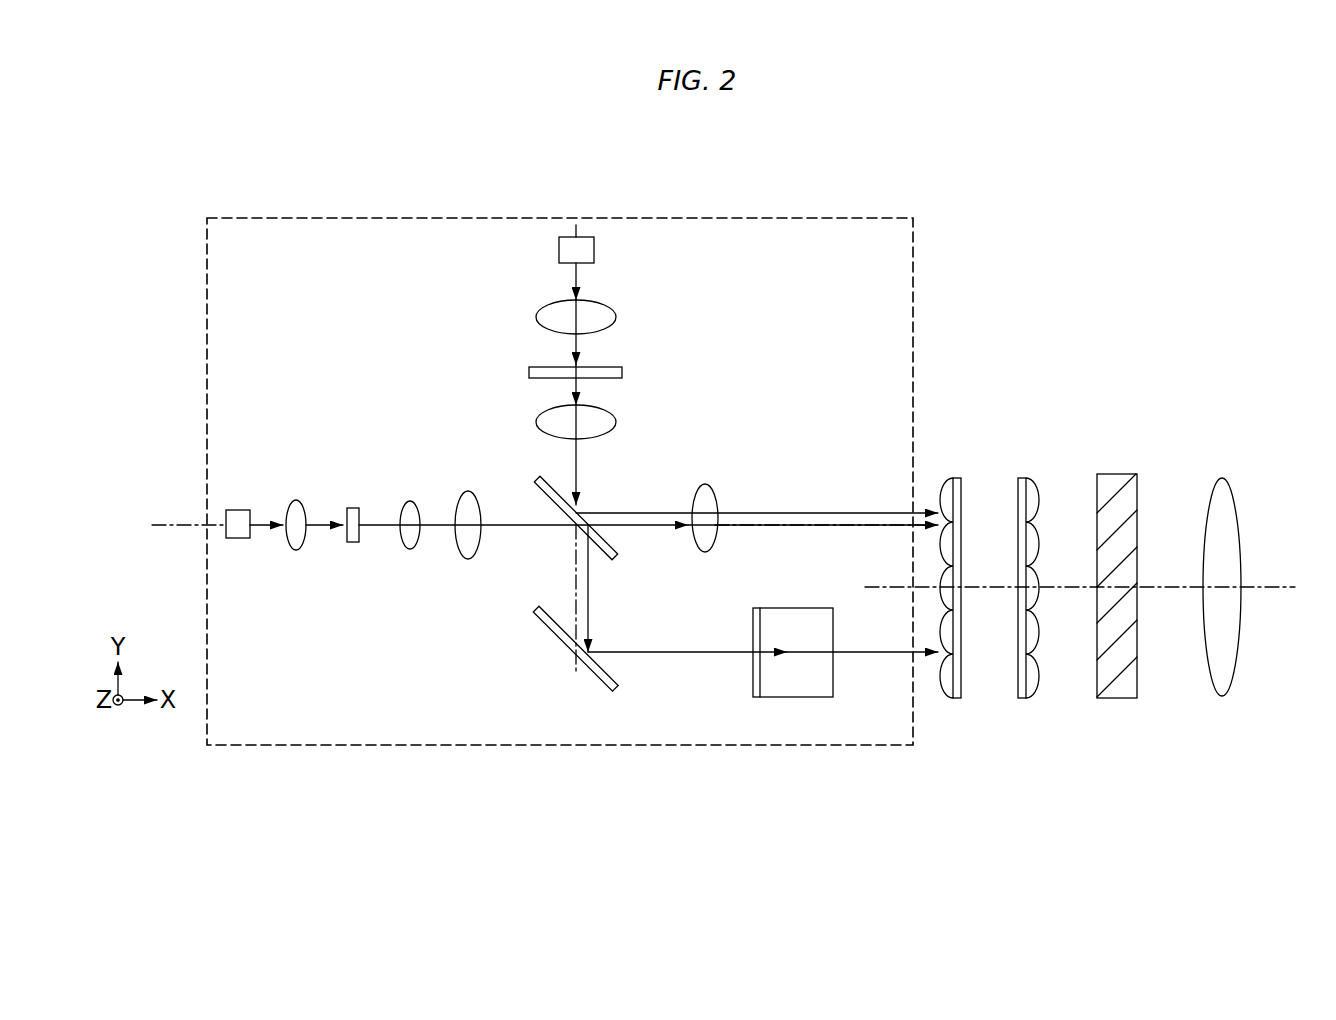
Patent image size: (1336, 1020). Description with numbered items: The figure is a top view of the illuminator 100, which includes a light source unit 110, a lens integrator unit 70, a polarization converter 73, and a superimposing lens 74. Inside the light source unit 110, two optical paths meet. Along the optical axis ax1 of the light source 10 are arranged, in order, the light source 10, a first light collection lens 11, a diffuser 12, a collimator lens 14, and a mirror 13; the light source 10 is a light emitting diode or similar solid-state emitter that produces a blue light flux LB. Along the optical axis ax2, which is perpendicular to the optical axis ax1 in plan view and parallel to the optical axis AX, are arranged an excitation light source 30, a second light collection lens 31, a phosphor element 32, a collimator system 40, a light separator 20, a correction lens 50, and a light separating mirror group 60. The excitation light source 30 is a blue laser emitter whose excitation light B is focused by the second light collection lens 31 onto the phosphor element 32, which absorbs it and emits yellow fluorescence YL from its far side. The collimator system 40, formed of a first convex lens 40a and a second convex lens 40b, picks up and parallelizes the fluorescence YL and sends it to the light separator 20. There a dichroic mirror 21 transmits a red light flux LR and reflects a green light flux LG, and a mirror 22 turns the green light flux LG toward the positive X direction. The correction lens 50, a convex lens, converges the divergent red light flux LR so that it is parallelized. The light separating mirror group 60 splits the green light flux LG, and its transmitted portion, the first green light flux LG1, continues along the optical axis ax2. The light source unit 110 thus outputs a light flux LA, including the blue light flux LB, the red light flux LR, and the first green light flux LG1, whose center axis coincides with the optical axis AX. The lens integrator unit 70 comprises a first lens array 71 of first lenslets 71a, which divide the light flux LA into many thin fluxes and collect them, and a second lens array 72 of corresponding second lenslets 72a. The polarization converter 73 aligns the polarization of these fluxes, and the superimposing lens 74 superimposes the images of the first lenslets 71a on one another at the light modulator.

The illuminator 100 is at (1035, 272).
The light source unit 110 is at (390, 218).
The light source 10 is at (594, 248).
The first light collection lens 11 is at (600, 318).
The diffuser 12 is at (605, 372).
The mirror 13 is at (585, 491).
The collimator lens 14 is at (600, 425).
The light separator 20 is at (581, 656).
The dichroic mirror 21 is at (608, 545).
The mirror 22 is at (615, 678).
The excitation light source 30 is at (232, 538).
The second light collection lens 31 is at (296, 548).
The phosphor element 32 is at (354, 542).
The collimator system 40 is at (443, 578).
The first convex lens 40a is at (410, 548).
The second convex lens 40b is at (470, 555).
The correction lens 50 is at (706, 490).
The light separating mirror group 60 is at (797, 700).
The lens integrator unit 70 is at (992, 570).
The first lens array 71 is at (954, 591).
The first lenslets 71a is at (945, 672).
The second lens array 72 is at (1029, 591).
The second lenslets 72a is at (1035, 672).
The polarization converter 73 is at (1115, 480).
The superimposing lens 74 is at (1222, 478).
The blue light flux LB is at (565, 273).
The red light flux LR is at (655, 512).
The green light flux LG is at (590, 613).
The first green light flux LG1 is at (860, 655).
The light flux LA is at (890, 665).
The fluorescence YL is at (512, 522).
The excitation light B is at (265, 520).
The optical axis ax1 is at (572, 662).
The optical axis ax2 is at (178, 528).
The optical axis AX is at (1285, 587).